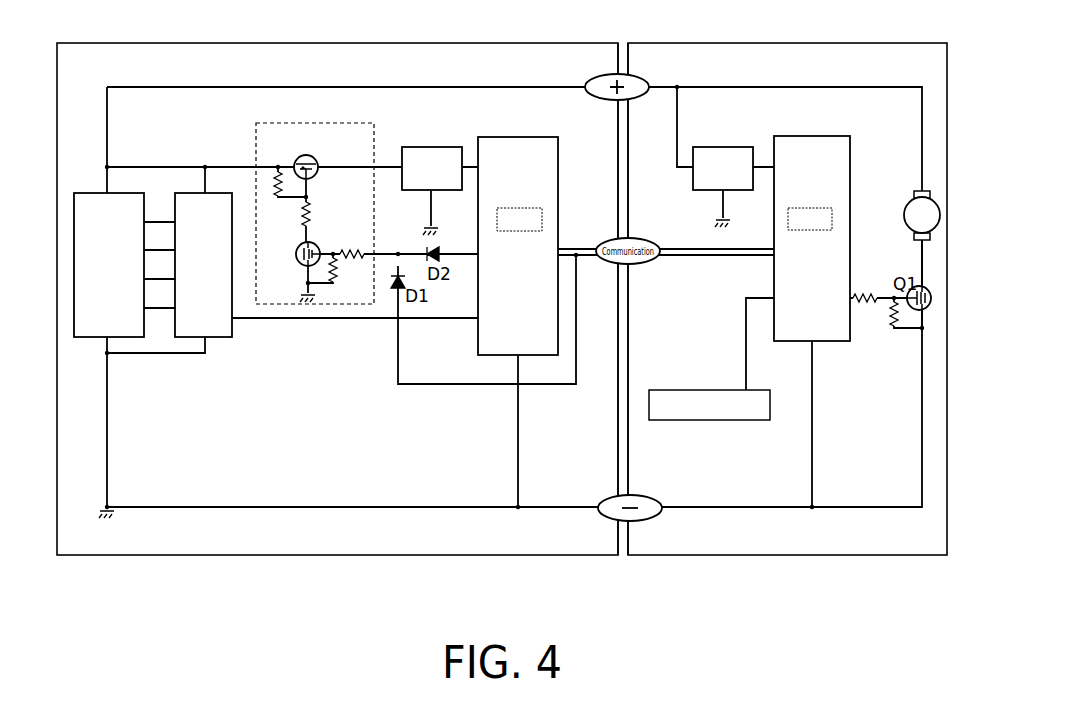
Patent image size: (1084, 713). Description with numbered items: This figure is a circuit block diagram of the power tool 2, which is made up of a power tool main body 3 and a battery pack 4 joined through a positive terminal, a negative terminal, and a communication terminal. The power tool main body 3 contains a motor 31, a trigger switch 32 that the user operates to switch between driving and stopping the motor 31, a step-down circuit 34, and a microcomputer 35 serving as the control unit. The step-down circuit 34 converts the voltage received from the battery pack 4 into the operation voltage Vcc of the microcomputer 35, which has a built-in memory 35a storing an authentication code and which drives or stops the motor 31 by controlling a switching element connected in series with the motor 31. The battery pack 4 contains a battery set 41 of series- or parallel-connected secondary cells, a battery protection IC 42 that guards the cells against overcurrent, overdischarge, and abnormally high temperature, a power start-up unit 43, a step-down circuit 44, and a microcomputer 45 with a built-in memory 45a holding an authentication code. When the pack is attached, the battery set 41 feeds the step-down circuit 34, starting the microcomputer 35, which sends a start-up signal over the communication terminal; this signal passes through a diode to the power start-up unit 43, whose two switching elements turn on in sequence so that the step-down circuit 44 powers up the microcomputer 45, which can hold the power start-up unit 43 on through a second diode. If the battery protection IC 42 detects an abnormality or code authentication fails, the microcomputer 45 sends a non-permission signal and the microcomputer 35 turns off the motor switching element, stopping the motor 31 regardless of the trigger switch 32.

The power tool 2 is at (458, 604).
The power tool main body 3 is at (925, 43).
The battery pack 4 is at (90, 43).
The motor 31 is at (906, 200).
The trigger switch 32 is at (745, 422).
The step-down circuit 34 is at (726, 147).
The microcomputer 35 is at (812, 219).
The memory 35a is at (815, 208).
The battery set 41 is at (92, 338).
The battery protection IC 42 is at (228, 338).
The power start-up unit 43 is at (327, 213).
The step-down circuit 44 is at (428, 147).
The microcomputer 45 is at (511, 226).
The memory 45a is at (527, 208).